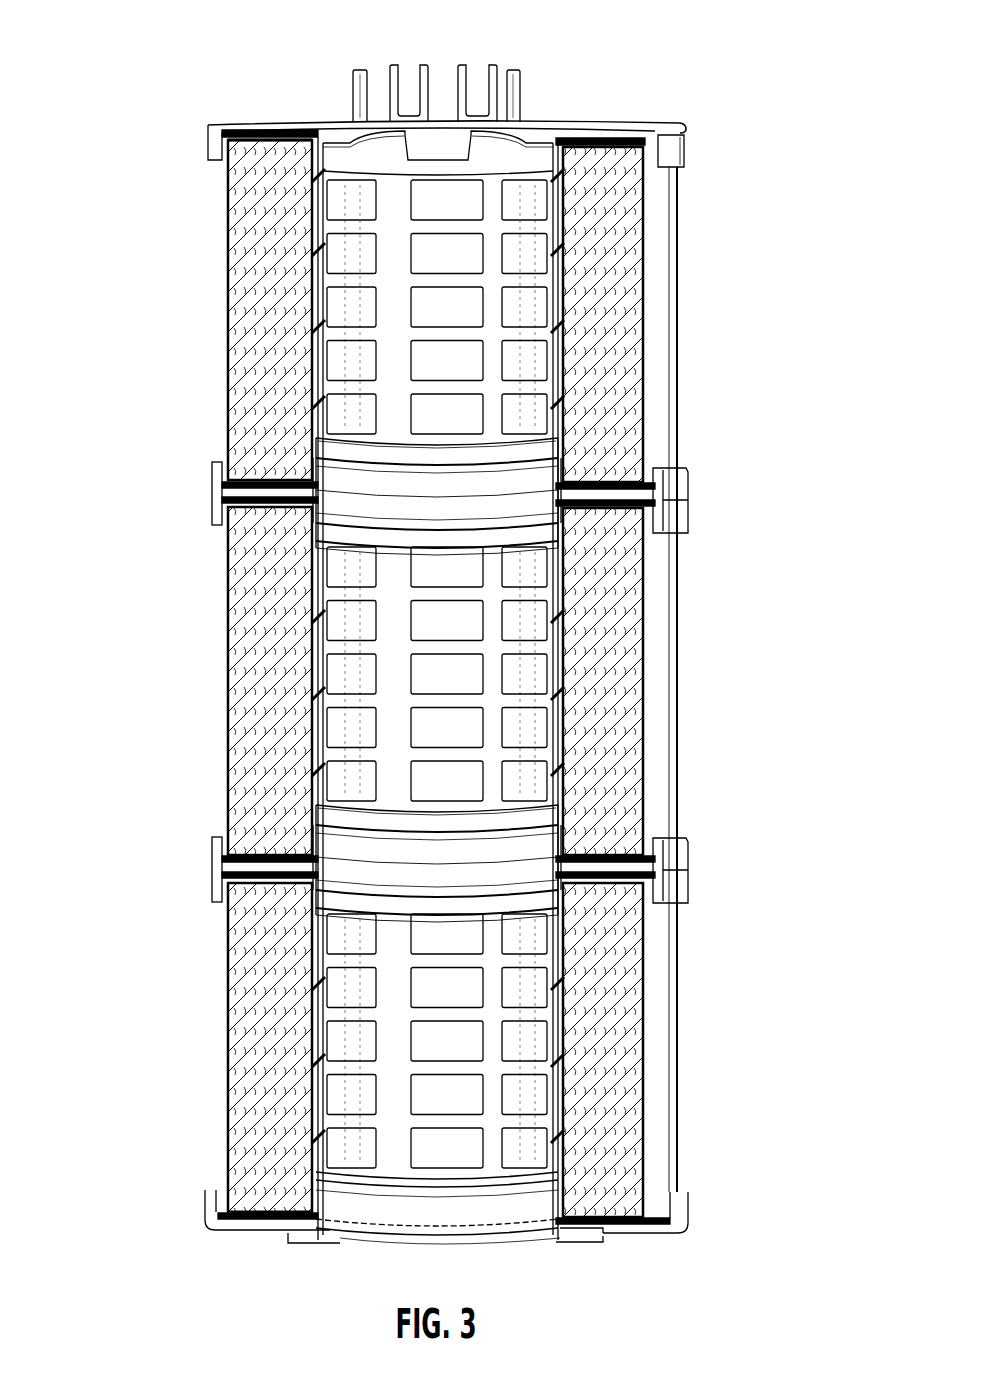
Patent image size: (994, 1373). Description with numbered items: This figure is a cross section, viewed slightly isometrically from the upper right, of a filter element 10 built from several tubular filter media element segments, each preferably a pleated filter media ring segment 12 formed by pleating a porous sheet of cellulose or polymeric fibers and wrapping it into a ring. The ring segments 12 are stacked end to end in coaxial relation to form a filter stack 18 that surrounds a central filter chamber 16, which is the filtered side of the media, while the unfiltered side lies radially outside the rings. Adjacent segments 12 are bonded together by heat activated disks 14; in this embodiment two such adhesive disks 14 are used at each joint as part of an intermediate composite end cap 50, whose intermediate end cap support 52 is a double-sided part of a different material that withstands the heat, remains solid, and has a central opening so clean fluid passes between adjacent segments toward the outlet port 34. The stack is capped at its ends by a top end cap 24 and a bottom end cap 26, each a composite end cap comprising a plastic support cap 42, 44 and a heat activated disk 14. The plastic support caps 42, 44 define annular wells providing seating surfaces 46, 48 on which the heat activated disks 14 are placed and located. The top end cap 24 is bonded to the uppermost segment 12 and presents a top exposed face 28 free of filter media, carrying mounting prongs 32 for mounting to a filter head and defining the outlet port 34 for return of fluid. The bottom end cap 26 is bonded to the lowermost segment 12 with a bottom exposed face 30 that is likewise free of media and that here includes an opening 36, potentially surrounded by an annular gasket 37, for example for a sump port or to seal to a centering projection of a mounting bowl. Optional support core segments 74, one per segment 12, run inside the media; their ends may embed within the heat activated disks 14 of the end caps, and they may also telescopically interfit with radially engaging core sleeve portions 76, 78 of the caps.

The filter element 10 is at (722, 83).
The pleated filter media ring segment 12 is at (656, 292).
The heat activated disk 14 is at (600, 150).
The central filter chamber 16 is at (490, 262).
The filter stack 18 is at (176, 249).
The top end cap 24 is at (278, 125).
The bottom end cap 26 is at (238, 1238).
The top exposed face 28 is at (325, 129).
The bottom exposed face 30 is at (650, 1240).
The mounting prongs 32 is at (477, 92).
The outlet port 34 is at (437, 150).
The opening 36 is at (510, 1200).
The annular gasket 37 is at (300, 1245).
The plastic support cap 42 is at (630, 138).
The plastic support cap 44 is at (600, 1244).
The seating surface 46 is at (248, 150).
The seating surface 48 is at (240, 1210).
The intermediate composite end cap 50 is at (206, 495).
The intermediate end cap support 52 is at (222, 498).
The support core segment 74 is at (312, 330).
The core sleeve portion 76 is at (330, 850).
The collar ledge 78 is at (325, 888).